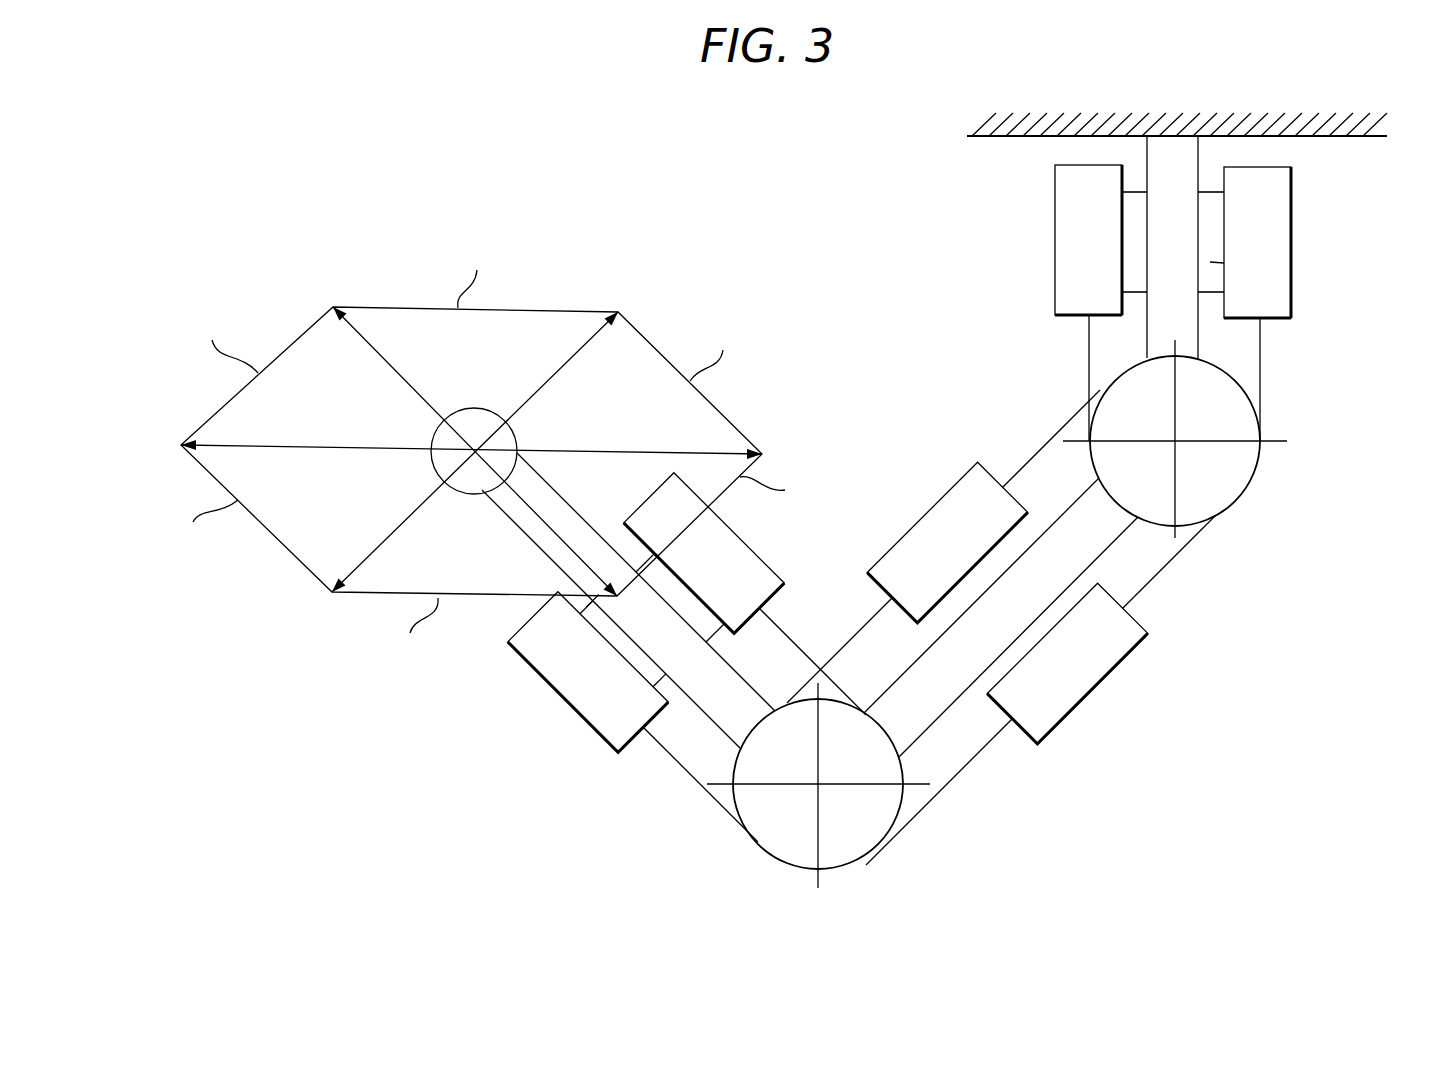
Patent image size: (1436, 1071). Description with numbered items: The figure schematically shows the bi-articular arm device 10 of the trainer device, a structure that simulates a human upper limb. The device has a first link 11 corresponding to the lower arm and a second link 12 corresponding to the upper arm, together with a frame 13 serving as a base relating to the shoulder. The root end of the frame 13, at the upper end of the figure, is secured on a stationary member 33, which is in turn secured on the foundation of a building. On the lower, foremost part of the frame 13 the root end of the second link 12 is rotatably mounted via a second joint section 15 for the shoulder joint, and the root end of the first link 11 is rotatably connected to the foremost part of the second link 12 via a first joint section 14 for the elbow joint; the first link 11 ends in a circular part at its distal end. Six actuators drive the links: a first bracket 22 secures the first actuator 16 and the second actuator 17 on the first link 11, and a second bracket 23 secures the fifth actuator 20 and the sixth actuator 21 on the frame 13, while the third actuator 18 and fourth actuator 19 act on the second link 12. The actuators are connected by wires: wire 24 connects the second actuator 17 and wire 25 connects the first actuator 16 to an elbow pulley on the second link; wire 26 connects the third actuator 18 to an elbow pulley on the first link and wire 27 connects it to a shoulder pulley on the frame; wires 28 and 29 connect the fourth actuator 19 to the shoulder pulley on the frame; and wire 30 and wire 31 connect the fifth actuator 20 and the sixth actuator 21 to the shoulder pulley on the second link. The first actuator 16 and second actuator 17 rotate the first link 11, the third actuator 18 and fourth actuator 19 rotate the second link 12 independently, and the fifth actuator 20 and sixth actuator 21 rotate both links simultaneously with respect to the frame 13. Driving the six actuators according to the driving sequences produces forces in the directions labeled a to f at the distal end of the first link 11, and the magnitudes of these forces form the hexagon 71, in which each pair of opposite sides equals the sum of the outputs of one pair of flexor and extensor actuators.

The bi-articular arm device 10 is at (1426, 617).
The first link 11 is at (712, 722).
The second link 12 is at (1077, 500).
The frame 13 is at (1198, 340).
The first joint section 14 is at (848, 860).
The second joint section 15 is at (1263, 462).
The first actuator 16 is at (753, 555).
The second actuator 17 is at (555, 689).
The third actuator 18 is at (952, 485).
The fourth actuator 19 is at (1090, 692).
The fifth actuator 20 is at (1055, 233).
The sixth actuator 21 is at (1291, 235).
The first bracket 22 is at (634, 648).
The second bracket 23 is at (1210, 263).
The wire 24 is at (683, 766).
The wire 25 is at (797, 652).
The wire 26 is at (883, 603).
The wire 27 is at (1068, 425).
The wire 28 is at (950, 779).
The wire 29 is at (1172, 555).
The wire 30 is at (1089, 338).
The wire 31 is at (1262, 384).
The stationary member 33 is at (1183, 118).
The hexagon 71 is at (292, 565).